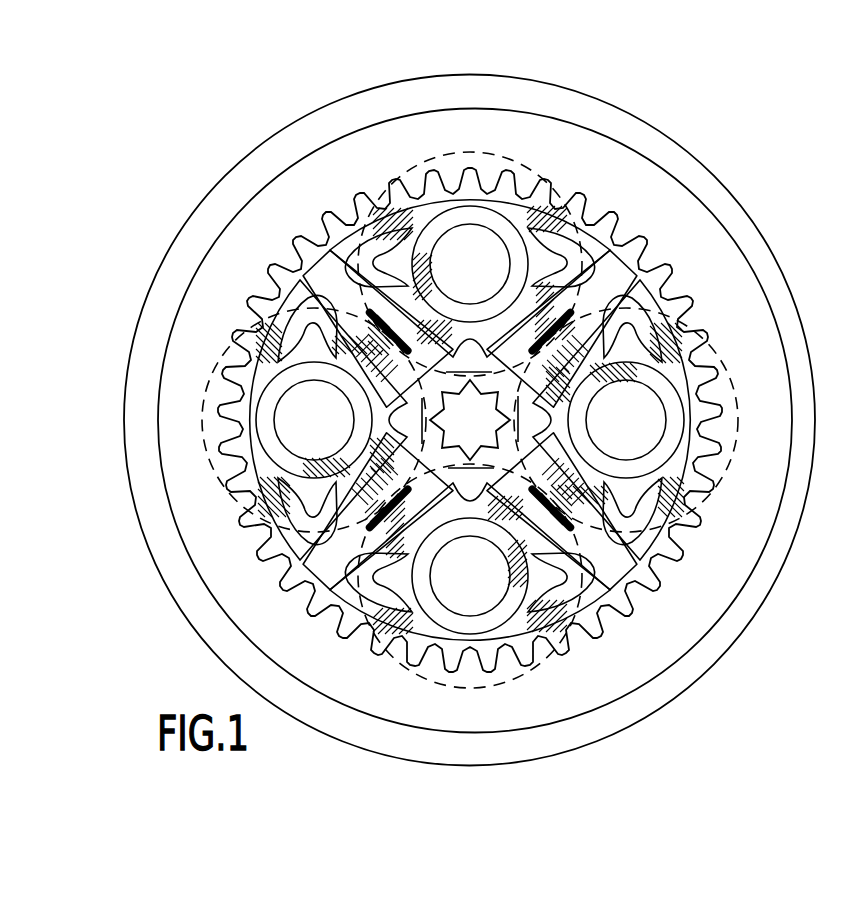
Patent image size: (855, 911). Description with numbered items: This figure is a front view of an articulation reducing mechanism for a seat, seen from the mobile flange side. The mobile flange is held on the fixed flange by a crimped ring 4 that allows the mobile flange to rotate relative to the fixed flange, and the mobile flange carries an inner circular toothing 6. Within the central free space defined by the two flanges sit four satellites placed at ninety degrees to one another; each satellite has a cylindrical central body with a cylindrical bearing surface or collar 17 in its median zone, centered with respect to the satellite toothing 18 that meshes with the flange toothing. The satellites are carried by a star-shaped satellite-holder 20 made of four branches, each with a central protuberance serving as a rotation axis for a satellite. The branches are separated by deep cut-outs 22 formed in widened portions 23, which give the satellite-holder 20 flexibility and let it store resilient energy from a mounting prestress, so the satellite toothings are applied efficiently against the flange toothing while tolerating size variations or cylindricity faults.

The crimped ring 4 is at (666, 158).
The inner circular toothing 6 is at (587, 235).
The cylindrical bearing surface or collar 17 is at (493, 165).
The toothing 18 is at (518, 180).
The satellite-holder 20 is at (457, 307).
The deep cut-outs 22 is at (645, 240).
The widened portions 23 is at (510, 337).